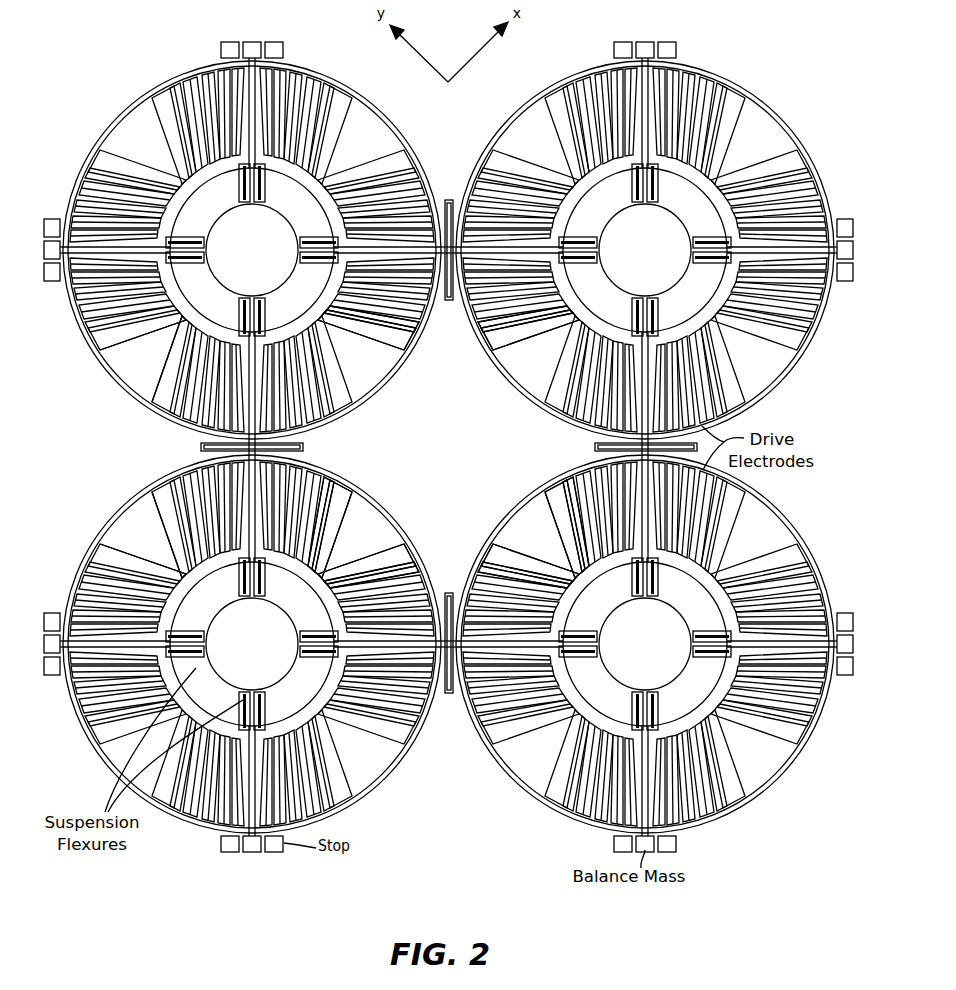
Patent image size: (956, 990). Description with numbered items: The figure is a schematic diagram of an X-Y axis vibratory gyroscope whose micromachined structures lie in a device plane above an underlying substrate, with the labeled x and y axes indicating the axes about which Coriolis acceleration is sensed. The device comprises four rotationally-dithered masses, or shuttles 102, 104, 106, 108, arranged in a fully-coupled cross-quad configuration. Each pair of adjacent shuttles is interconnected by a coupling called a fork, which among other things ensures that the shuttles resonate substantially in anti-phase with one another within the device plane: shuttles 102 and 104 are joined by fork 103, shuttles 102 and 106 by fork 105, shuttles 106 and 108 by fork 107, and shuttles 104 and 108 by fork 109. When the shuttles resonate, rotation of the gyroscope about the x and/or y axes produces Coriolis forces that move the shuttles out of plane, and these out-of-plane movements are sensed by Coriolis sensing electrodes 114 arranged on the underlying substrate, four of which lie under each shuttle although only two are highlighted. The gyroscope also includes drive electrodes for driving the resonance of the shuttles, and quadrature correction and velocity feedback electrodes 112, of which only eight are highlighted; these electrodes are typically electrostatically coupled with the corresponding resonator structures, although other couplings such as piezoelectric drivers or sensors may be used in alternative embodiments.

The shuttle 102 is at (239, 259).
The shuttle 104 is at (632, 259).
The shuttle 106 is at (239, 653).
The shuttle 108 is at (632, 639).
The fork 103 is at (449, 198).
The fork 105 is at (270, 447).
The fork 107 is at (450, 697).
The fork 109 is at (628, 447).
The quadrature correction and velocity feedback electrodes 112 is at (407, 348).
The Coriolis sensing electrodes 114 is at (137, 372).